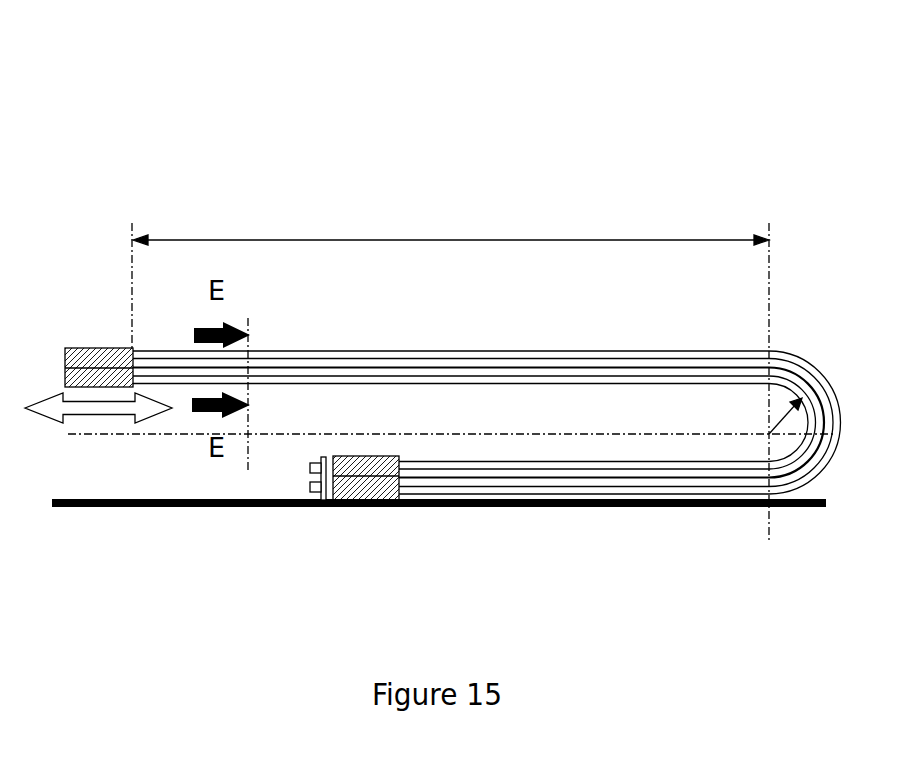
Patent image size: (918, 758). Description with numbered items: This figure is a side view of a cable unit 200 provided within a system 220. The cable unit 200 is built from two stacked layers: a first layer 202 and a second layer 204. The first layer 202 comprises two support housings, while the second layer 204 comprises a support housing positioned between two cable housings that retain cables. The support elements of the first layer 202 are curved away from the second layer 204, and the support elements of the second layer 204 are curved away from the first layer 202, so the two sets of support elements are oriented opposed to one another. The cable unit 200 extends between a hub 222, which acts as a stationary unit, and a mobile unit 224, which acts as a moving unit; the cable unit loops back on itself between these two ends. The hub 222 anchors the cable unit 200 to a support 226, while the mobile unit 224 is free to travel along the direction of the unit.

The system 220 is at (346, 143).
The cable unit 200 is at (539, 326).
The second layer 204 is at (452, 465).
The first layer 202 is at (482, 490).
The mobile unit 224 is at (58, 348).
The hub 222 is at (350, 508).
The support 226 is at (293, 508).